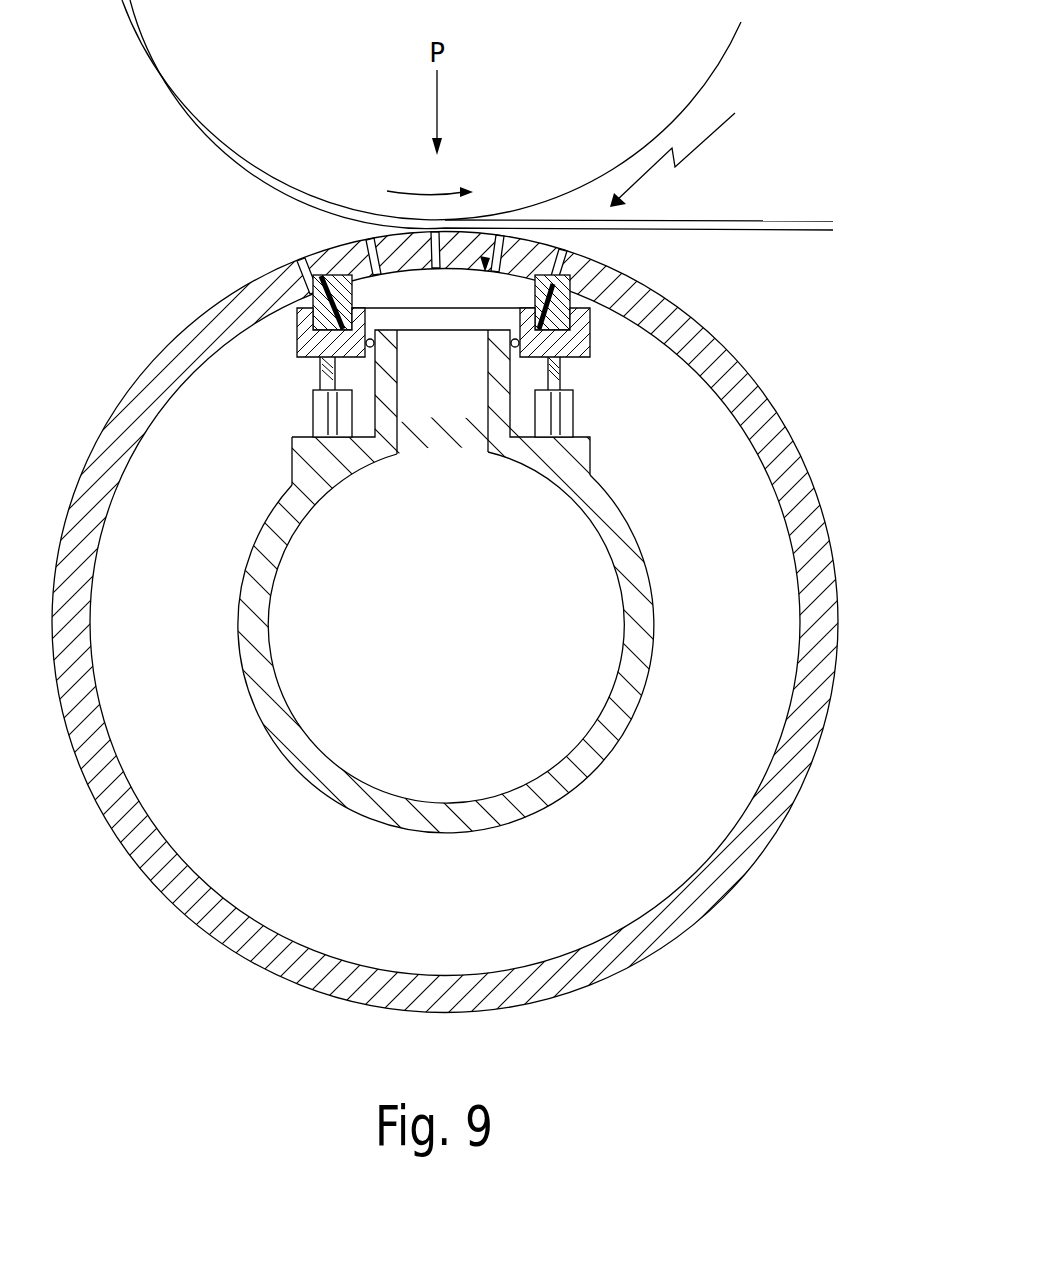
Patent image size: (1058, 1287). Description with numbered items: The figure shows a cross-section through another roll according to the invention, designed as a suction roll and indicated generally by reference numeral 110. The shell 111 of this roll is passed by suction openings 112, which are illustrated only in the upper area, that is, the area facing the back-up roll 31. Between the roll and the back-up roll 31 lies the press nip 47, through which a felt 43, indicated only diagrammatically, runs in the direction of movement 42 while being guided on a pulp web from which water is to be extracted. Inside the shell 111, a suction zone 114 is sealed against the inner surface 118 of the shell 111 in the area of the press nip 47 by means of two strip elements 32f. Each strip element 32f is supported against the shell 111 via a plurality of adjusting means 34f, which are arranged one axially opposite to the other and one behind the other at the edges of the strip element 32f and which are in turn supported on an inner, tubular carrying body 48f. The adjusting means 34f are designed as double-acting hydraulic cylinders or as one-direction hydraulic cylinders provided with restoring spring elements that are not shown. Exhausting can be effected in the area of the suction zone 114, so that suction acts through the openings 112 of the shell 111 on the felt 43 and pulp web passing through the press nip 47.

The back-up roll 31 is at (588, 33).
The direction of movement 42 is at (417, 192).
The felt 43 is at (657, 229).
The press nip 47 is at (686, 145).
The roll 110 is at (160, 312).
The shell 111 is at (750, 373).
The suction openings 112 is at (297, 257).
The suction zone 114 is at (485, 262).
The inner surface 118 is at (712, 330).
The strip elements 32f is at (352, 292).
The adjusting means 34f is at (327, 410).
The carrying body 48f is at (253, 622).